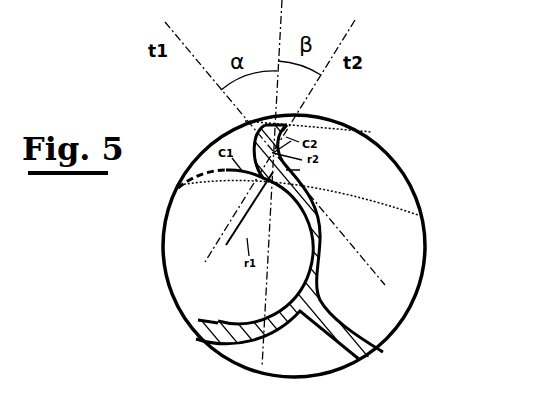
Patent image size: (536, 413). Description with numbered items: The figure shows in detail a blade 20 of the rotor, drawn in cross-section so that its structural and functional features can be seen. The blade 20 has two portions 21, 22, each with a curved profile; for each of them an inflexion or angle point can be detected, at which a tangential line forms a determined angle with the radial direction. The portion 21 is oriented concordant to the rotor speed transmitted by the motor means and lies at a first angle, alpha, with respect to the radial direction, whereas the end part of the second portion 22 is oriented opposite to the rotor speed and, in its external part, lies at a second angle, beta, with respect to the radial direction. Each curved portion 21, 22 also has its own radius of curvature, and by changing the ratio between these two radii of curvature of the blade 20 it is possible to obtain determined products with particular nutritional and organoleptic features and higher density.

The blade 20 is at (396, 189).
The portion 21 is at (292, 205).
The second portion 22 is at (273, 153).